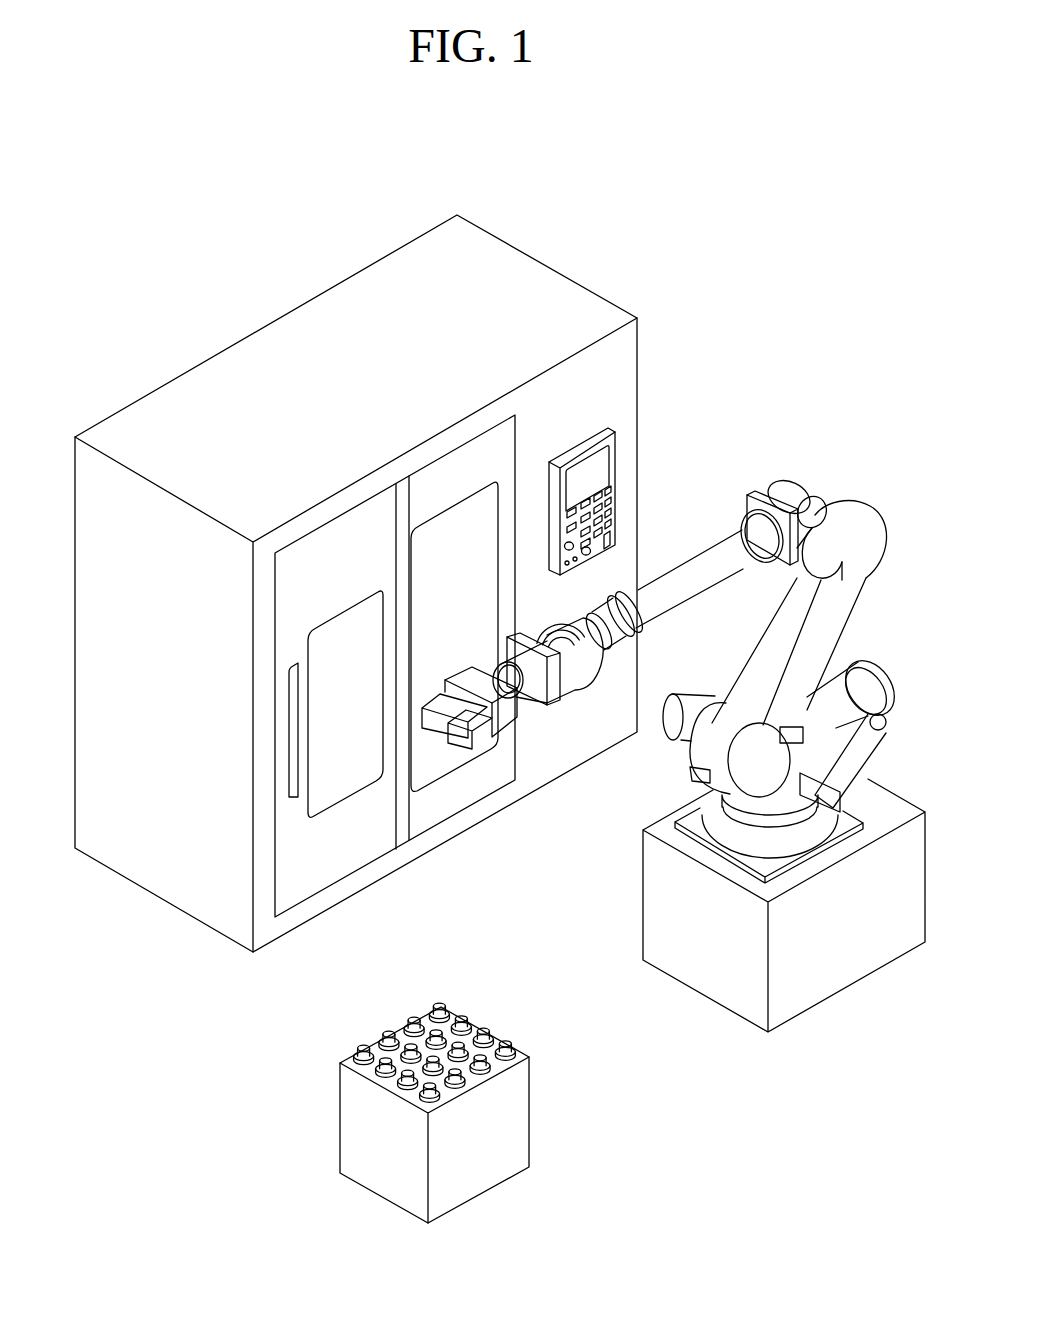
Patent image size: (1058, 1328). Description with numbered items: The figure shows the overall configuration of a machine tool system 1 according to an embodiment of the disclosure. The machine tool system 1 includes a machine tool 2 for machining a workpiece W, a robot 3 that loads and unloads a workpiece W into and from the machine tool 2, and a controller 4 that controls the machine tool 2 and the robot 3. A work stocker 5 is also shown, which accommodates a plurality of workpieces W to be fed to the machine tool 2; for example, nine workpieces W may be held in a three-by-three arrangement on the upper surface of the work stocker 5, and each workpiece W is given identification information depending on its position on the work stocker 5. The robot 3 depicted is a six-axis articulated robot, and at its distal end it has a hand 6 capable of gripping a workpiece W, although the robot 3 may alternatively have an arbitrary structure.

The machine tool system 1 is at (810, 290).
The machine tool 2 is at (234, 360).
The robot 3 is at (862, 492).
The controller 4 is at (632, 450).
The work stocker 5 is at (322, 1113).
The hand 6 is at (505, 726).
The workpiece W is at (437, 1003).